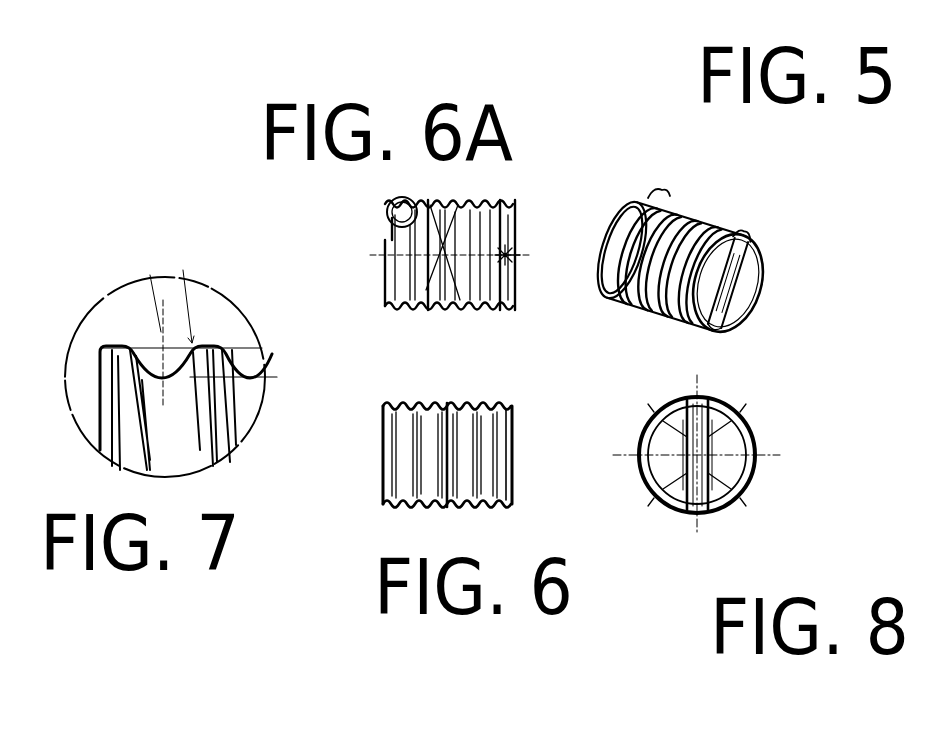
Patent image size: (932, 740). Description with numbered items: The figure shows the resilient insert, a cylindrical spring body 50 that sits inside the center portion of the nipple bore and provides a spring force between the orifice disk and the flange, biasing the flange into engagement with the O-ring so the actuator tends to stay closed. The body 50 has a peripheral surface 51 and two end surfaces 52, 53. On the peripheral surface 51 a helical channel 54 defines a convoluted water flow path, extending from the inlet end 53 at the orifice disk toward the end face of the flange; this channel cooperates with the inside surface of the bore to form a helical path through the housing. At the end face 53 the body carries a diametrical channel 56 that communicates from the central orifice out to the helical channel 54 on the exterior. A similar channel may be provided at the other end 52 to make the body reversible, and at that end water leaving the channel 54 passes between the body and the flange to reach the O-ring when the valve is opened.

In FIG. 5, the resilient spring body 50 is at (708, 258).
In FIG. 5, the peripheral surface 51 is at (655, 243).
In FIG. 5, the end surface 52 is at (770, 280).
In FIG. 6, the end surface 52 is at (517, 477).
In FIG. 5, the end surface 53 is at (603, 233).
In FIG. 6, the end surface 53 is at (383, 470).
In FIG. 6, the helical channel 54 is at (487, 393).
In FIG. 8, the diametrical channel 56 is at (710, 513).